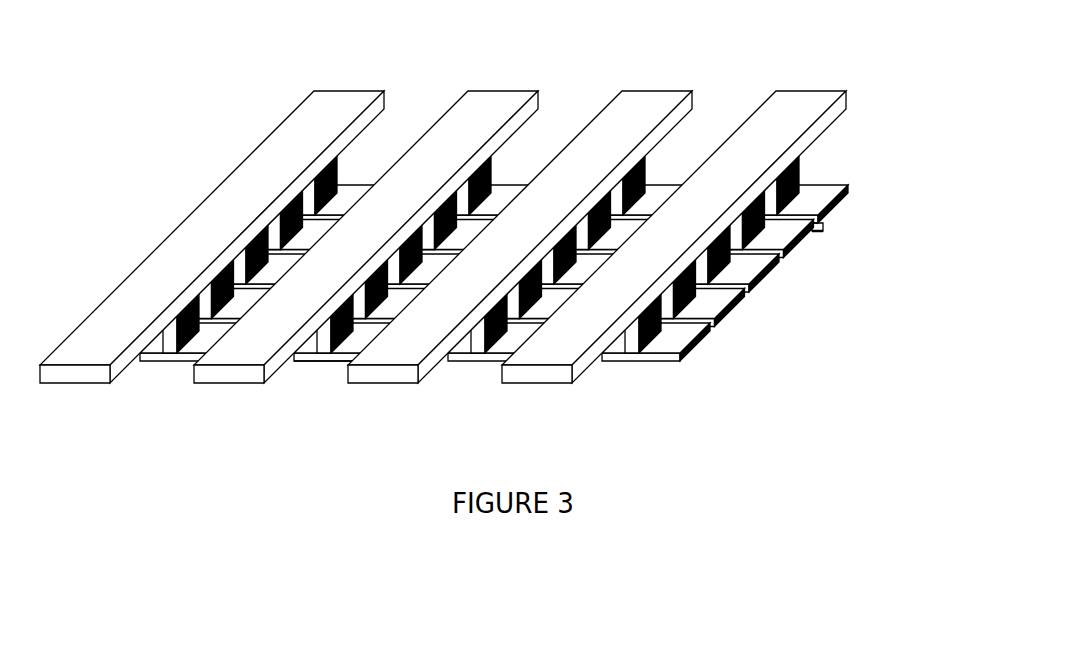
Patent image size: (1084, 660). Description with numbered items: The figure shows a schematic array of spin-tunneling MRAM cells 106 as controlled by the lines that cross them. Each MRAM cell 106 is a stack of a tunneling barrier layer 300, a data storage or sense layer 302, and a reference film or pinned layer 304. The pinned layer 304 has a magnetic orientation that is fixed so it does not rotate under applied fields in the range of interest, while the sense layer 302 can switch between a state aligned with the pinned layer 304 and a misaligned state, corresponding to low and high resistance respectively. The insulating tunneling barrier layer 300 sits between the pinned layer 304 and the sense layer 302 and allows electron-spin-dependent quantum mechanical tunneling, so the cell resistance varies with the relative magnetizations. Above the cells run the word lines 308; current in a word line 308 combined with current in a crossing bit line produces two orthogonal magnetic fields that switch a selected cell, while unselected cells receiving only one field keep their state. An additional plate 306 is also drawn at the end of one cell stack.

The MRAM cell 106 is at (337, 325).
The tunneling barrier layer 300 is at (637, 331).
The sense layer 302 is at (660, 318).
The pinned layer 304 is at (630, 348).
The top electrode plate 306 is at (820, 183).
The word line 308 is at (653, 91).